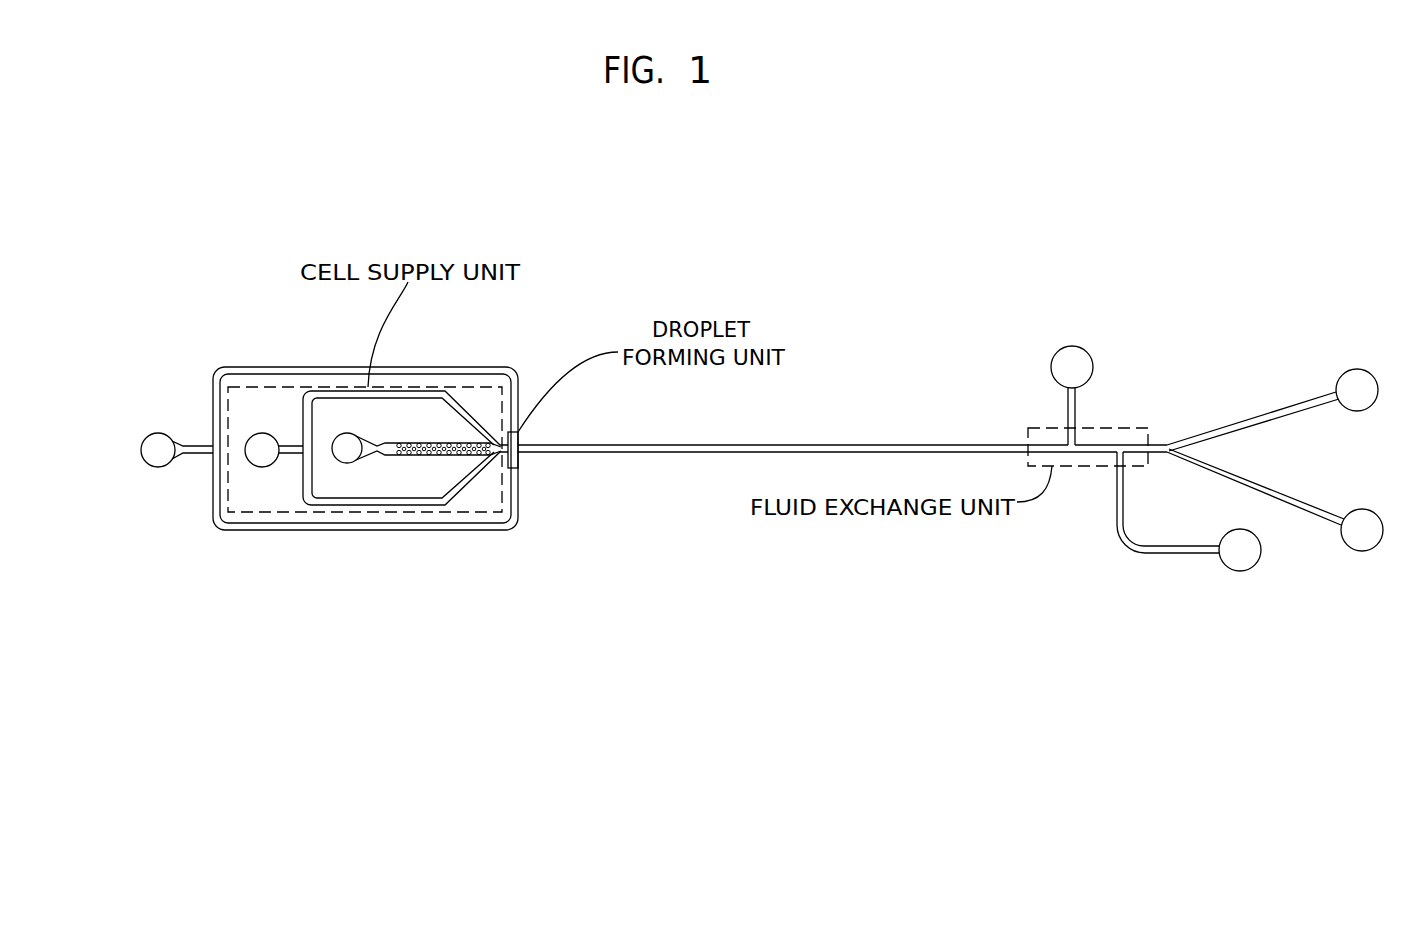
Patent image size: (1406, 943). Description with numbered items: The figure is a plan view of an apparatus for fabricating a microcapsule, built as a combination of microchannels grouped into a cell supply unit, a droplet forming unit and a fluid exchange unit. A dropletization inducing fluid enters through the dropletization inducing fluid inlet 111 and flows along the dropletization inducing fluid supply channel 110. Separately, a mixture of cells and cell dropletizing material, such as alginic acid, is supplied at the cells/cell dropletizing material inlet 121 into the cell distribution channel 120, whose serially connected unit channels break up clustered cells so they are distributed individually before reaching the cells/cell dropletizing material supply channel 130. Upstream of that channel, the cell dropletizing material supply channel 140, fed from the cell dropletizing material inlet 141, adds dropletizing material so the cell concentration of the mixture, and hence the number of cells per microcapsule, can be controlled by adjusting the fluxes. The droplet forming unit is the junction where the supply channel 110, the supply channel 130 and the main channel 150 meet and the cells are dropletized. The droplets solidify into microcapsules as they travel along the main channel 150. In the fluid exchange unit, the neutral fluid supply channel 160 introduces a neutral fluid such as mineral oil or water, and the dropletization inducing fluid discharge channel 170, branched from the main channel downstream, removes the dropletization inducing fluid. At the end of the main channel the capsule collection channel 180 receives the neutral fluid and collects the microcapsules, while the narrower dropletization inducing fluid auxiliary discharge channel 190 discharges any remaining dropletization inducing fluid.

The dropletization inducing fluid supply channel 110 is at (312, 368).
The dropletization inducing fluid inlet 111 is at (147, 463).
The cell distribution channel 120 is at (450, 432).
The cells/cell dropletizing material inlet 121 is at (347, 465).
The cells/cell dropletizing material supply channel 130 is at (501, 462).
The cell dropletizing material supply channel 140 is at (427, 505).
The cell dropletizing material inlet 141 is at (262, 467).
The main channel 150 is at (763, 445).
The neutral fluid supply channel 160 is at (1068, 415).
The dropletization inducing fluid discharge channel 170 is at (1153, 555).
The capsule collection channel 180 is at (1267, 415).
The dropletization inducing fluid auxiliary discharge channel 190 is at (1298, 497).